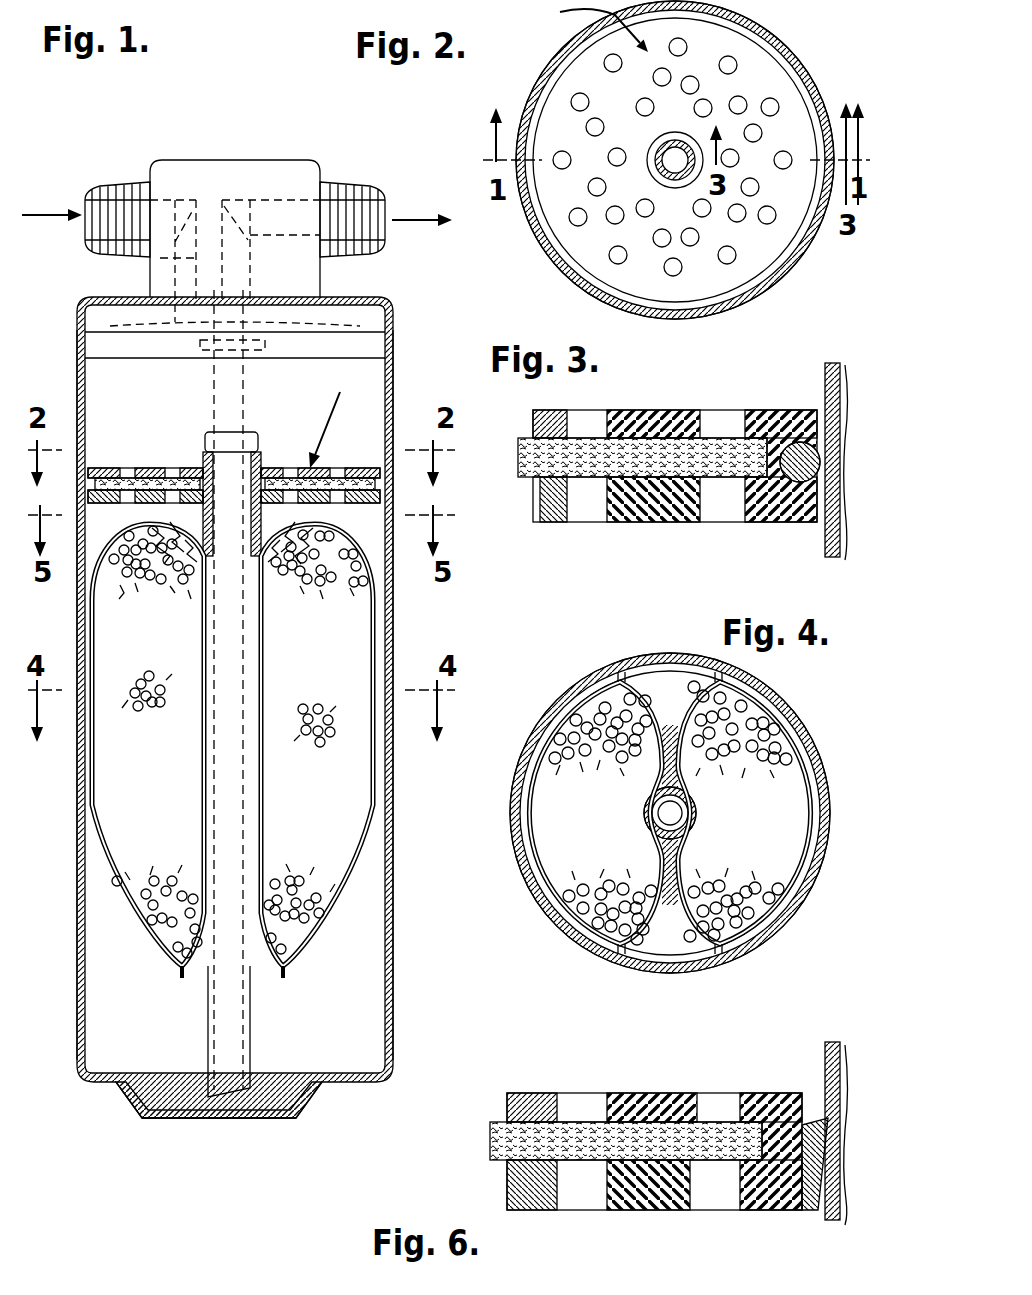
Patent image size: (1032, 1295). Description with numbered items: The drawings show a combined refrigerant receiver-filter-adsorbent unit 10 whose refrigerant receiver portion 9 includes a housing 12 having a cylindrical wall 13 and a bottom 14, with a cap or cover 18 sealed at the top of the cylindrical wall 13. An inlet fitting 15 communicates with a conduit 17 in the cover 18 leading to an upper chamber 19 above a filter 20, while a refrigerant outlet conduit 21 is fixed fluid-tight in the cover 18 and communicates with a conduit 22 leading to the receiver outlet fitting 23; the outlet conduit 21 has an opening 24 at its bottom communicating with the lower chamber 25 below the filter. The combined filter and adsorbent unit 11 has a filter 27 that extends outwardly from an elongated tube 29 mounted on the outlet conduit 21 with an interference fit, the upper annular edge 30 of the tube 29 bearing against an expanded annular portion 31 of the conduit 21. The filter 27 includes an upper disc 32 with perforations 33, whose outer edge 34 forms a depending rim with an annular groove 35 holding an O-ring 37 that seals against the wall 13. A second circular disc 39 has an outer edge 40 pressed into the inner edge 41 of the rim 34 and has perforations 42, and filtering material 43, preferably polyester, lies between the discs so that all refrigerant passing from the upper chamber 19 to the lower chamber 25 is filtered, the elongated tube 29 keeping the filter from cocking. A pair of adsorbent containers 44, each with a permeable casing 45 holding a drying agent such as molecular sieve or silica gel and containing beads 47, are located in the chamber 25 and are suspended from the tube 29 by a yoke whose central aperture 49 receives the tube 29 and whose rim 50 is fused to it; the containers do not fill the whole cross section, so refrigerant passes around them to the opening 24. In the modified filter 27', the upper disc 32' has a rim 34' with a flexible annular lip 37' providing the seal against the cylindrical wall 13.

In FIG. 1, the refrigerant receiver portion 9 is at (393, 340).
In FIG. 1, the combined refrigerant receiver-filter-adsorbent unit 10 is at (402, 300).
In FIG. 1, the combined filter and adsorbent unit 11 is at (333, 414).
In FIG. 2, the combined filter and adsorbent unit 11 is at (591, 26).
In FIG. 1, the housing 12 is at (393, 360).
In FIG. 2, the housing 12 is at (791, 62).
In FIG. 3, the housing 12 is at (825, 375).
In FIG. 4, the housing 12 is at (808, 722).
In FIG. 6, the housing 12 is at (822, 1050).
In FIG. 1, the cylindrical wall 13 is at (395, 630).
In FIG. 2, the cylindrical wall 13 is at (812, 78).
In FIG. 3, the cylindrical wall 13 is at (845, 365).
In FIG. 4, the cylindrical wall 13 is at (783, 700).
In FIG. 6, the cylindrical wall 13 is at (845, 1045).
In FIG. 1, the bottom 14 is at (245, 1118).
In FIG. 1, the inlet fitting 15 is at (105, 182).
In FIG. 1, the conduit 17 is at (160, 262).
In FIG. 1, the cap or cover 18 is at (355, 275).
In FIG. 1, the chamber 19 is at (170, 386).
In FIG. 1, the filter 20 is at (142, 466).
In FIG. 1, the refrigerant outlet conduit 21 is at (250, 372).
In FIG. 2, the refrigerant outlet conduit 21 is at (688, 140).
In FIG. 4, the refrigerant outlet conduit 21 is at (700, 813).
In FIG. 1, the conduit 22 is at (250, 250).
In FIG. 1, the receiver outlet fitting 23 is at (352, 183).
In FIG. 1, the opening 24 is at (250, 1093).
In FIG. 1, the chamber 25 is at (306, 1001).
In FIG. 4, the chamber 25 is at (690, 698).
In FIG. 1, the filter 27 is at (316, 422).
In FIG. 2, the filter 27 is at (666, 160).
In FIG. 3, the filter 27 is at (609, 392).
In FIG. 6, the modified filter 27' is at (600, 1046).
In FIG. 1, the elongated tube 29 is at (258, 428).
In FIG. 2, the elongated tube 29 is at (656, 178).
In FIG. 1, the upper annular edge 30 is at (205, 440).
In FIG. 2, the upper annular edge 30 is at (655, 152).
In FIG. 1, the expanded annular portion 31 is at (255, 400).
In FIG. 1, the upper disc 32 is at (234, 446).
In FIG. 2, the upper disc 32 is at (817, 263).
In FIG. 3, the upper disc 32 is at (675, 400).
In FIG. 6, the upper disc 32' is at (654, 1074).
In FIG. 1, the perforations 33 is at (128, 470).
In FIG. 2, the perforations 33 is at (584, 100).
In FIG. 3, the perforations 33 is at (577, 412).
In FIG. 6, the perforations 33 is at (572, 1093).
In FIG. 1, the outer edge or rim 34 is at (260, 491).
In FIG. 3, the outer edge or rim 34 is at (680, 452).
In FIG. 6, the rim 34' is at (667, 1132).
In FIG. 3, the annular groove 35 is at (795, 522).
In FIG. 1, the O-ring 37 is at (408, 466).
In FIG. 2, the O-ring 37 is at (801, 296).
In FIG. 3, the O-ring 37 is at (838, 574).
In FIG. 6, the flexible annular lip 37' is at (817, 1246).
In FIG. 1, the second circular disc 39 is at (340, 503).
In FIG. 3, the second circular disc 39 is at (612, 522).
In FIG. 6, the second circular disc 39 is at (620, 1210).
In FIG. 1, the outer edge 40 is at (176, 560).
In FIG. 3, the outer edge 40 is at (770, 522).
In FIG. 3, the inner edge 41 is at (745, 522).
In FIG. 1, the perforations 42 is at (130, 505).
In FIG. 3, the perforations 42 is at (566, 522).
In FIG. 6, the perforations 42 is at (560, 1210).
In FIG. 1, the filtering material 43 is at (381, 476).
In FIG. 3, the filtering material 43 is at (520, 470).
In FIG. 6, the filtering material 43 is at (492, 1140).
In FIG. 1, the adsorbent containers 44 is at (352, 648).
In FIG. 4, the adsorbent containers 44 is at (545, 852).
In FIG. 1, the casing 45 is at (385, 728).
In FIG. 4, the casing 45 is at (513, 850).
In FIG. 1, the desiccant beads 47 is at (130, 586).
In FIG. 4, the desiccant beads 47 is at (586, 740).
In FIG. 1, the central aperture 49 is at (192, 570).
In FIG. 1, the rim 50 is at (272, 570).